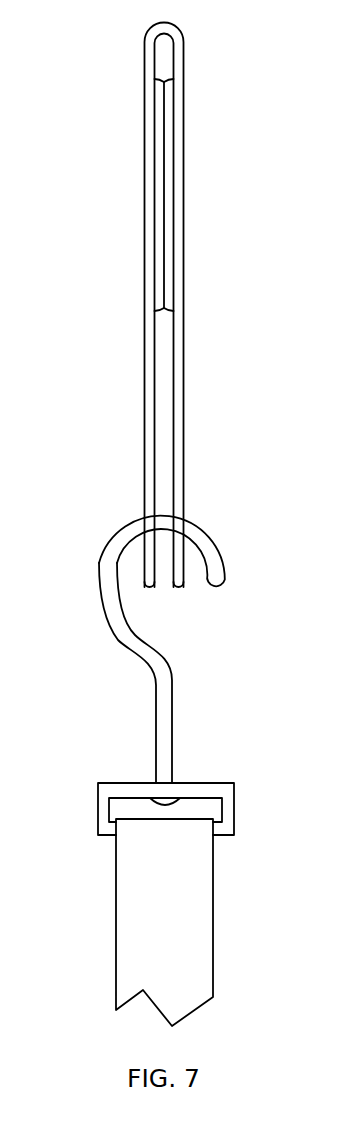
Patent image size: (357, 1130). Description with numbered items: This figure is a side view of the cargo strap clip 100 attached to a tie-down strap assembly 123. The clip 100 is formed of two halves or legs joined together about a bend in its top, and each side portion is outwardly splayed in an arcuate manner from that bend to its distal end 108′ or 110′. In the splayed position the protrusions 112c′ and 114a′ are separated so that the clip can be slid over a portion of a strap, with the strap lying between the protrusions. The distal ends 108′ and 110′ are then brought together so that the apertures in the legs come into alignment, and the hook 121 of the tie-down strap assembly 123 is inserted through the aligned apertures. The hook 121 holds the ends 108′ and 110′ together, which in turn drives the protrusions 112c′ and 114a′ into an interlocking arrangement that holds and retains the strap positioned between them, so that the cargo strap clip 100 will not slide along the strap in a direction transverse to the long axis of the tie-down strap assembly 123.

The cargo strap clip 100 is at (165, 523).
The protrusion 112c′ is at (157, 290).
The protrusion 114a′ is at (170, 255).
The distal end of side portion 108′ is at (150, 588).
The distal end of side portion 110′ is at (178, 588).
The hook 121 is at (212, 543).
The tie-down strap assembly 123 is at (115, 934).